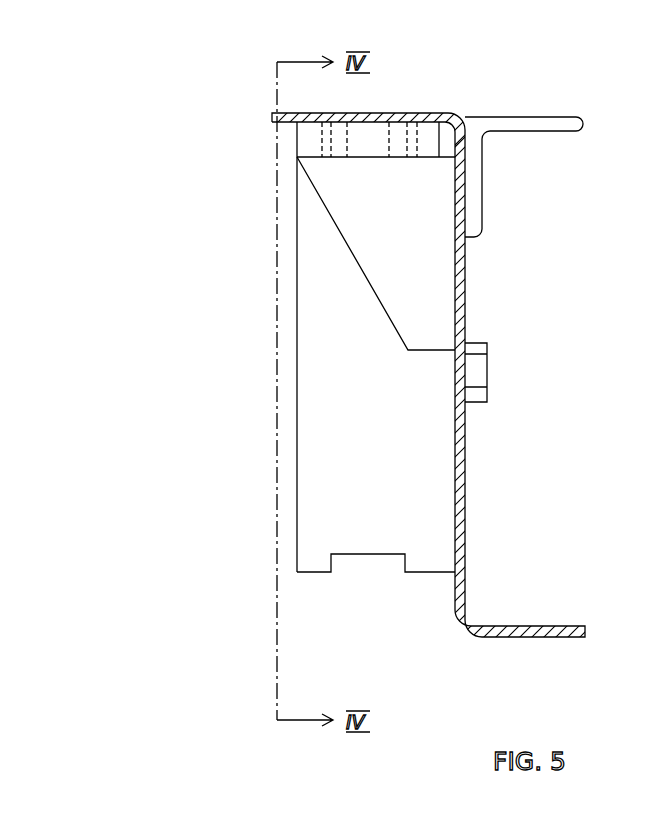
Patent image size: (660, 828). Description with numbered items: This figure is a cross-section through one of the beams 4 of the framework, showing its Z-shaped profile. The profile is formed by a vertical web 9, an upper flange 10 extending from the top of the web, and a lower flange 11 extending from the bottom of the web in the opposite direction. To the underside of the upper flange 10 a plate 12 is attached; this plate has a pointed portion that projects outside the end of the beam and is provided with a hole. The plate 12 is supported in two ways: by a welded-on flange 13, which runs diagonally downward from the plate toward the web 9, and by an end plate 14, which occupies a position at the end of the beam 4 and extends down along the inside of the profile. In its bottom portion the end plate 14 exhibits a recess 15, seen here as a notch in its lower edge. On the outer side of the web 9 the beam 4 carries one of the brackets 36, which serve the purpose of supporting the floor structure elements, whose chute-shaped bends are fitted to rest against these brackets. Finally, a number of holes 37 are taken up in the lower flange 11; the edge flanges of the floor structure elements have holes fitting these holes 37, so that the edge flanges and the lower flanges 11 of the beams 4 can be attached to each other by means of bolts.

The beam 4 is at (451, 349).
The web 9 is at (462, 307).
The upper flange 10 is at (315, 113).
The lower flange 11 is at (565, 626).
The plate 12 is at (315, 137).
The welded-on flange 13 is at (383, 215).
The end plate 14 is at (335, 298).
The recess 15 is at (331, 560).
The bracket 36 is at (515, 125).
The hole 37 is at (527, 626).